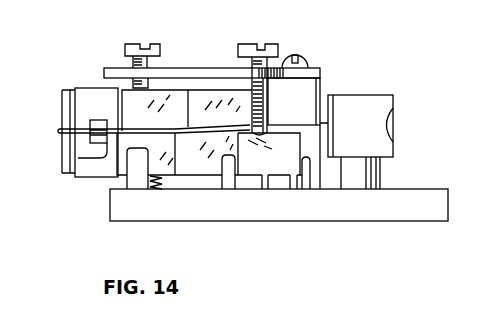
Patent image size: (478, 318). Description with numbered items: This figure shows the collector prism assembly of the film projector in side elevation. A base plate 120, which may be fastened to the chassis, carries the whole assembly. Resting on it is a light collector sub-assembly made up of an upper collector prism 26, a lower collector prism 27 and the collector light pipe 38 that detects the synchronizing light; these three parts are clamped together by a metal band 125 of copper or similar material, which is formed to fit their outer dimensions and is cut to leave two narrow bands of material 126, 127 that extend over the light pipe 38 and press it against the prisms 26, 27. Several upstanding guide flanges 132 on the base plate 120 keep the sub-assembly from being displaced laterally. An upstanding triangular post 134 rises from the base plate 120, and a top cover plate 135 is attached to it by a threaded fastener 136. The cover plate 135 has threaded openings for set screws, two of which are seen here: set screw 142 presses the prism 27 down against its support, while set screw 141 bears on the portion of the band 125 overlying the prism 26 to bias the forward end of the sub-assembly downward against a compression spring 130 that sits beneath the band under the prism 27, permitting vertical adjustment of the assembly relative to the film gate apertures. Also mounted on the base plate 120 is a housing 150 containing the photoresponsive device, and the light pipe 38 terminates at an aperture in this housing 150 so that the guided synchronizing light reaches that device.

The collector prism 26 is at (170, 92).
The collector prism 27 is at (253, 170).
The collector light pipe 38 is at (125, 127).
The base plate 120 is at (411, 190).
The metal band 125 is at (87, 177).
The narrow band of material 126 is at (88, 124).
The narrow band of material 127 is at (78, 158).
The compression spring 130 is at (161, 192).
The upstanding guide flanges 132 is at (133, 185).
The upstanding triangular post 134 is at (323, 90).
The top cover plate 135 is at (212, 68).
The threaded fastener 136 is at (305, 55).
The set screw 141 is at (127, 43).
The set screw 142 is at (271, 50).
The housing 150 is at (385, 103).